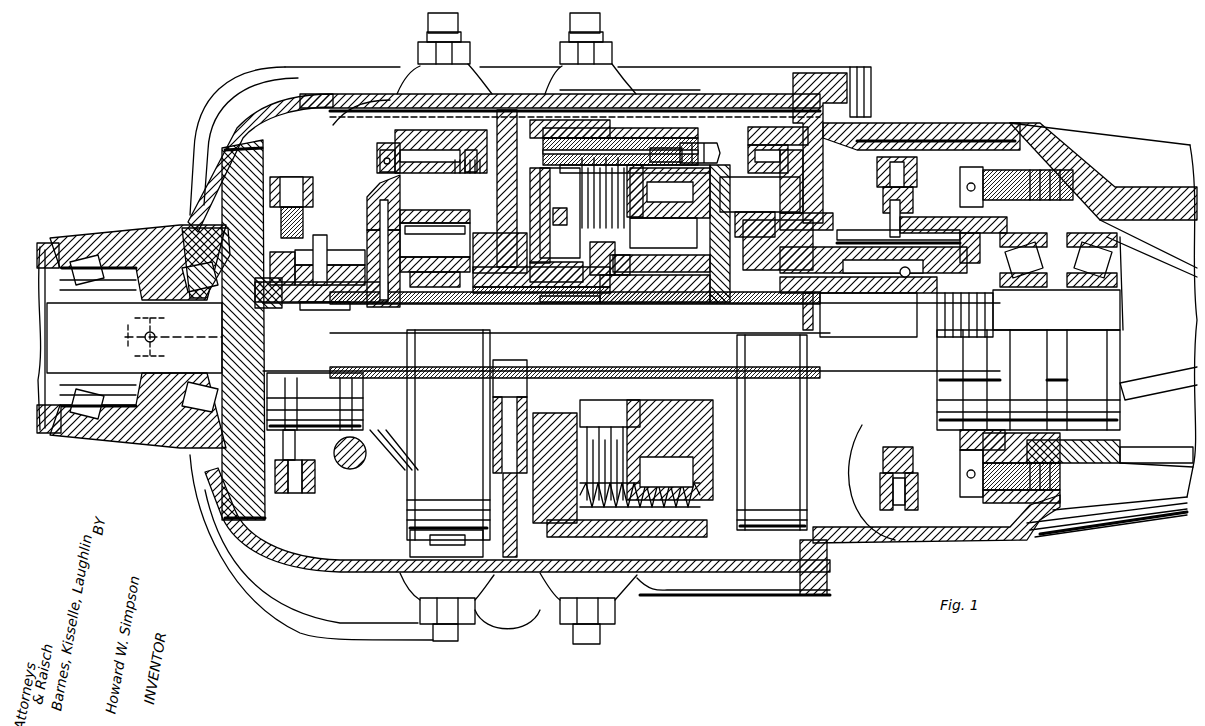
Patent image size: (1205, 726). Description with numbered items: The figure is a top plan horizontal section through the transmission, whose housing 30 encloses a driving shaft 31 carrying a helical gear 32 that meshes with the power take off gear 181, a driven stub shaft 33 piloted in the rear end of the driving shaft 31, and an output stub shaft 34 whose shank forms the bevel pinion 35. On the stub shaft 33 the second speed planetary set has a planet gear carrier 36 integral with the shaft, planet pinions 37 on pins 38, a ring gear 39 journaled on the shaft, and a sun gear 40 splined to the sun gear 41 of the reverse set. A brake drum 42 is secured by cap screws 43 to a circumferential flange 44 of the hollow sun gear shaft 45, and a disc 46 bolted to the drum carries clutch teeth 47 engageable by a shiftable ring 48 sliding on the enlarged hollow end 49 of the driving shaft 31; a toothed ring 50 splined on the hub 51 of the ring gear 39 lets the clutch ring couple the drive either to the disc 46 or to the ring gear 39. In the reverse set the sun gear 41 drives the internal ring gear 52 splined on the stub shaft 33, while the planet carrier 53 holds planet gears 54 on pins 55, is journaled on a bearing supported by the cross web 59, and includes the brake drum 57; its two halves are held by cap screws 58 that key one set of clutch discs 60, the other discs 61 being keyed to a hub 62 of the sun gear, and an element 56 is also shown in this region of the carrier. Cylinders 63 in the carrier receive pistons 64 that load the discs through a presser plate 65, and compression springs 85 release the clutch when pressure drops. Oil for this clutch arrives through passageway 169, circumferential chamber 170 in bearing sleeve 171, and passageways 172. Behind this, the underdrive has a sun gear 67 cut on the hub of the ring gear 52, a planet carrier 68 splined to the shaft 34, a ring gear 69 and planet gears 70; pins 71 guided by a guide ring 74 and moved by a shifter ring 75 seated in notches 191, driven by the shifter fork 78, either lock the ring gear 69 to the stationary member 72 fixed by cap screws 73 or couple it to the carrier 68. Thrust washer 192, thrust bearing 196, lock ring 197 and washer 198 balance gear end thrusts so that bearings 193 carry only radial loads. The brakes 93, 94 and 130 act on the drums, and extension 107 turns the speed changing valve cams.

The housing 30 is at (660, 100).
The driving shaft 31 is at (112, 365).
The helical gear 32 is at (212, 425).
The driven stub shaft 33 is at (447, 330).
The stub shaft 34 is at (961, 361).
The beveled gear 35 is at (1140, 395).
The planet gear carrier 36 is at (420, 227).
The planet pinions 37 is at (370, 226).
The pins 38 is at (435, 248).
The ring gear 39 is at (372, 192).
The sun gear 40 is at (437, 303).
The sun gear 41 is at (660, 298).
The brake drum 42 is at (477, 137).
The cap screws 43 is at (363, 137).
The circumferential flange 44 is at (462, 130).
The hollow sun gear shaft 45 is at (526, 298).
The disc 46 is at (372, 205).
The clutch teeth 47 is at (338, 314).
The shiftable ring 48 is at (325, 432).
The enlarged hollow end 49 is at (212, 232).
The toothed ring 50 is at (172, 222).
The hub 51 is at (303, 314).
The ring gear 52 is at (716, 186).
The planet carrier 53 is at (705, 141).
The planet gears 54 is at (665, 210).
The pins 55 is at (663, 233).
The bolt shank 56 is at (703, 153).
The brake drum 57 is at (650, 150).
The cap screws 58 is at (462, 443).
The cross web 59 is at (528, 550).
The clutch discs 60 is at (590, 190).
The clutch discs 61 is at (606, 257).
The hub 62 is at (608, 424).
The cylinders 63 is at (628, 94).
The pistons 64 is at (520, 172).
The presser plate 65 is at (591, 208).
The sun gear 67 is at (752, 235).
The planet carrier 68 is at (865, 128).
The ring gear 69 is at (760, 125).
The planet gears 70 is at (782, 160).
The pins 71 is at (928, 235).
The stationary member 72 is at (968, 255).
The cap screws 73 is at (1050, 188).
The guide ring 74 is at (918, 215).
The shifter ring 75 is at (882, 535).
The shifter fork 78 is at (920, 510).
The compression springs 85 is at (706, 456).
The low-reverse brake band 93 is at (625, 527).
The low-reverse brake band 94 is at (700, 527).
The extension 107 is at (368, 473).
The brake 130 is at (393, 137).
The passageway 169 is at (505, 438).
The circumferential chamber 170 is at (503, 295).
The bearing sleeve 171 is at (501, 208).
The passageways 172 is at (555, 300).
The power take off gear 181 is at (233, 518).
The notches 191 is at (885, 240).
The thrust washer 192 is at (712, 295).
The bearings 193 is at (1015, 290).
The thrust bearing 196 is at (893, 283).
The lock ring 197 is at (914, 305).
The washer 198 is at (798, 348).